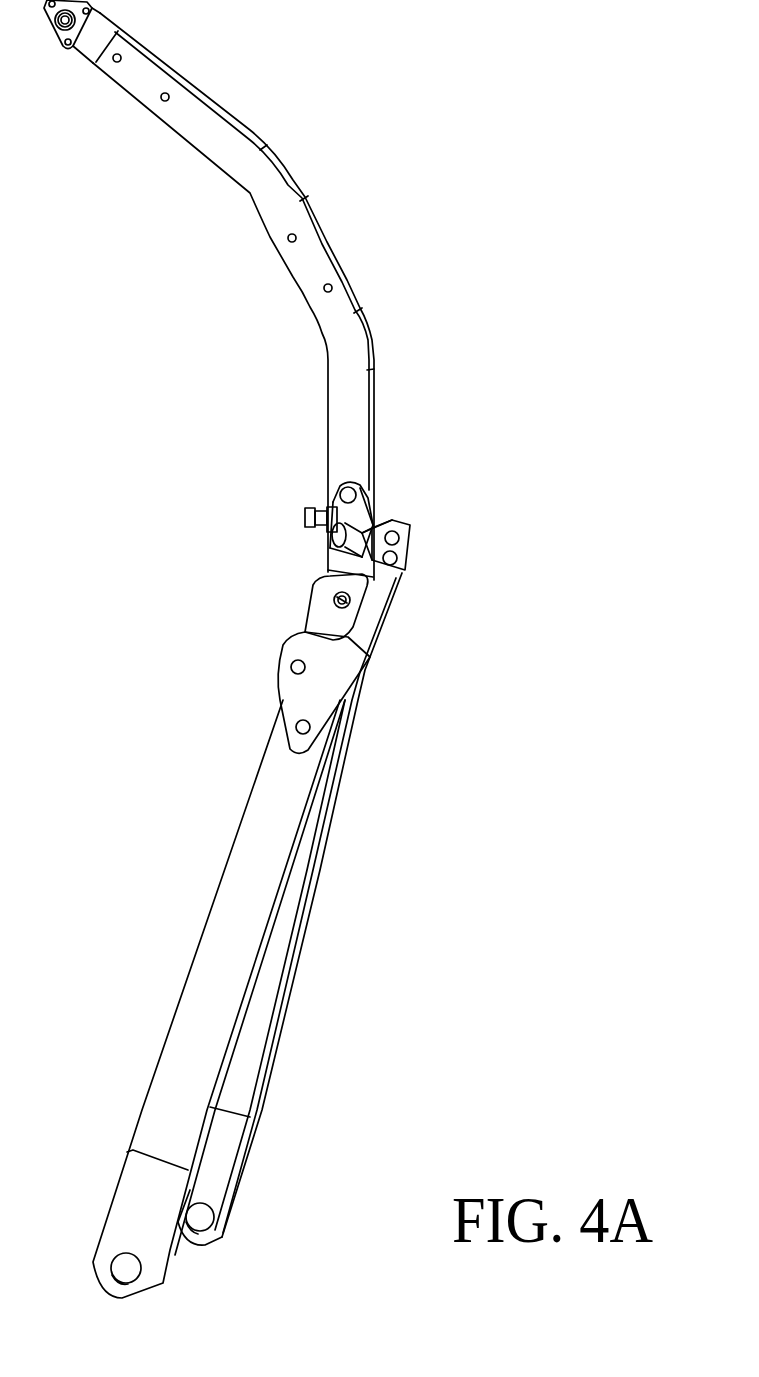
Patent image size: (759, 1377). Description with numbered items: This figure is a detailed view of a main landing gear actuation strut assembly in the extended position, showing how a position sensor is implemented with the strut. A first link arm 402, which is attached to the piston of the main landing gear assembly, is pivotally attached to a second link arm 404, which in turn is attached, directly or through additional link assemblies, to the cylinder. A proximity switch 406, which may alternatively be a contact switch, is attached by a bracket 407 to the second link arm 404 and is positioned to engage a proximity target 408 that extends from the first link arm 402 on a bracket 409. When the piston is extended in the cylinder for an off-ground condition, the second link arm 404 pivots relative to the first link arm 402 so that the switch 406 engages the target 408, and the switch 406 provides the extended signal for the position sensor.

The first link arm 402 is at (252, 1058).
The second link arm 404 is at (280, 205).
The proximity switch 406 is at (375, 517).
The bracket 407 is at (358, 500).
The proximity target 408 is at (377, 567).
The bracket 409 is at (367, 620).